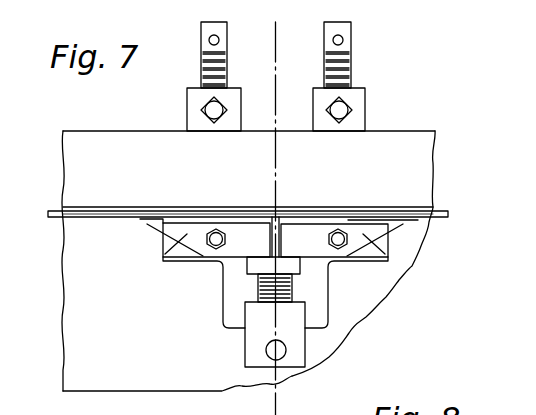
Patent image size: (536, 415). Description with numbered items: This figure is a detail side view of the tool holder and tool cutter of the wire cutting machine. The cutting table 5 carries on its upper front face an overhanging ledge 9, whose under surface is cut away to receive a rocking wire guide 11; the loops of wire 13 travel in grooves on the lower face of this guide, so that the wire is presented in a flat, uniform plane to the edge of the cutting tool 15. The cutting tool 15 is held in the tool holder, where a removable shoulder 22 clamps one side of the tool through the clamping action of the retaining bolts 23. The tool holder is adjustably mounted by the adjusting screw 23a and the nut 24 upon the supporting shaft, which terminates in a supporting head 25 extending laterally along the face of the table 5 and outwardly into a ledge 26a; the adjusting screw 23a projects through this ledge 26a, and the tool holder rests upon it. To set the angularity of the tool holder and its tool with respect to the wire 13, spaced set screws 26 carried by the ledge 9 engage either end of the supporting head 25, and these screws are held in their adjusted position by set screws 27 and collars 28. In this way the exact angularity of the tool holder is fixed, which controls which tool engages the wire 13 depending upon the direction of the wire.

The cutting table 5 is at (125, 372).
The overhanging ledge 9 is at (297, 47).
The rocking wire guide 11 is at (420, 204).
The wire 13 is at (449, 213).
The cutting tool 15 is at (150, 226).
The removable shoulder 22 is at (164, 259).
The retaining bolts 23 is at (225, 239).
The adjusting screw 23a is at (303, 300).
The nut 24 is at (296, 342).
The supporting head 25 is at (293, 295).
The set screws 26 is at (203, 72).
The ledge 26a is at (263, 263).
The set screws 27 is at (210, 110).
The collars 28 is at (197, 97).